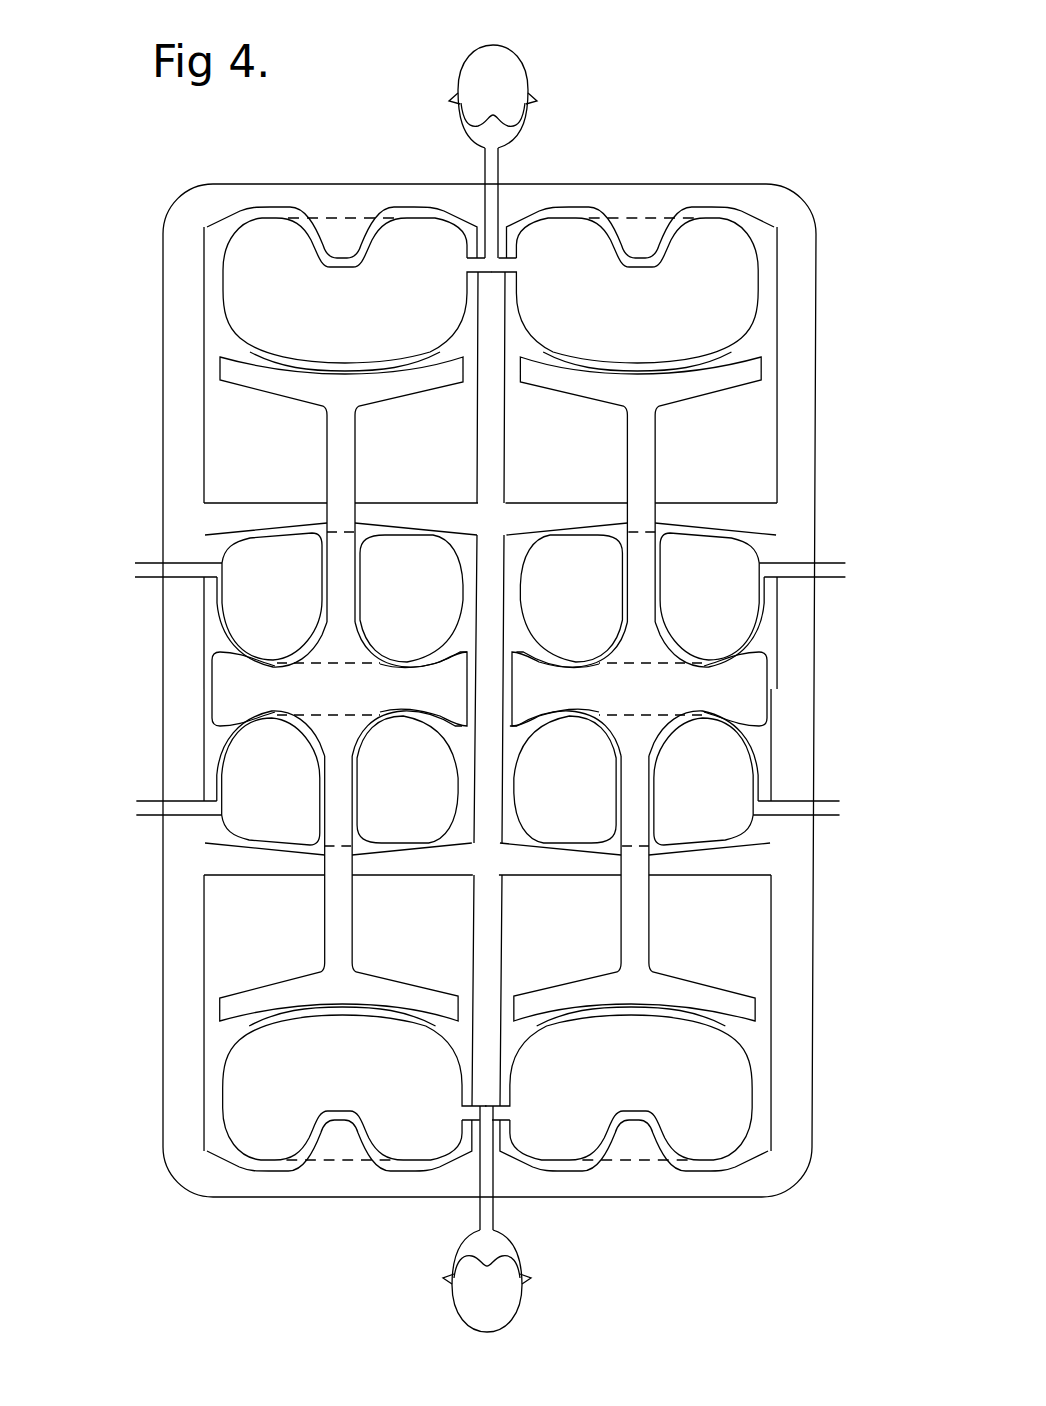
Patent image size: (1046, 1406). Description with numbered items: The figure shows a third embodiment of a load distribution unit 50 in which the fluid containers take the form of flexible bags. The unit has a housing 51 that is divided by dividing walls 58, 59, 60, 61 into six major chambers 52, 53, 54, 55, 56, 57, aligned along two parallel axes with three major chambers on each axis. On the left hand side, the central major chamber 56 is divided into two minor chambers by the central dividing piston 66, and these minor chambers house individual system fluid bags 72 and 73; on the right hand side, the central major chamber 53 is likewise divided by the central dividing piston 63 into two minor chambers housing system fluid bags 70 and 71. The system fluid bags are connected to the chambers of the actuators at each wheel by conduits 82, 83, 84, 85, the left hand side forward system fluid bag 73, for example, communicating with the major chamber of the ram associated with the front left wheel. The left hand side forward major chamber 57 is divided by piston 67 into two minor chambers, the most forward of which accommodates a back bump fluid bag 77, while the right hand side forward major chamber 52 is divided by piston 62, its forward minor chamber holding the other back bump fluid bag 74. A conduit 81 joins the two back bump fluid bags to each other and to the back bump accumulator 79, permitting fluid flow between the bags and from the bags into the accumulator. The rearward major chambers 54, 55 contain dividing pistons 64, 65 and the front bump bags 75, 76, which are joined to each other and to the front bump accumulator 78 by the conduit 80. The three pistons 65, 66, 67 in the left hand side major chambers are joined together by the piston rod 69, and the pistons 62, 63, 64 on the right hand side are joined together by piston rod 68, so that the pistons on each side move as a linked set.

The load distribution unit 50 is at (692, 167).
The housing 51 is at (808, 200).
The right hand side forward major chamber 52 is at (758, 340).
The major chamber 53 is at (760, 640).
The rearward major chamber 54 is at (760, 1047).
The rearward major chamber 55 is at (210, 1047).
The major chamber 56 is at (213, 740).
The left hand side forward major chamber 57 is at (222, 342).
The dividing wall 58 is at (758, 523).
The dividing wall 59 is at (762, 858).
The dividing wall 60 is at (213, 865).
The dividing wall 61 is at (237, 515).
The piston 62 is at (750, 373).
The central dividing piston 63 is at (750, 690).
The dividing piston 64 is at (750, 1008).
The dividing piston 65 is at (232, 1003).
The central dividing piston 66 is at (232, 690).
The piston 67 is at (268, 380).
The piston rod 68 is at (643, 947).
The piston rod 69 is at (333, 955).
The system fluid bag 70 is at (748, 612).
The system fluid bag 71 is at (752, 757).
The system fluid bag 72 is at (250, 787).
The system fluid bag 73 is at (237, 625).
The back bump fluid bag 74 is at (745, 295).
The front bump bag 75 is at (710, 1132).
The front bump bag 76 is at (235, 1112).
The back bump fluid bag 77 is at (235, 282).
The front bump accumulator 78 is at (523, 1290).
The back bump accumulator 79 is at (522, 65).
The conduit 80 is at (500, 1215).
The conduit 81 is at (510, 168).
The conduit 82 is at (833, 568).
The conduit 83 is at (838, 800).
The conduit 84 is at (143, 800).
The conduit 85 is at (143, 566).